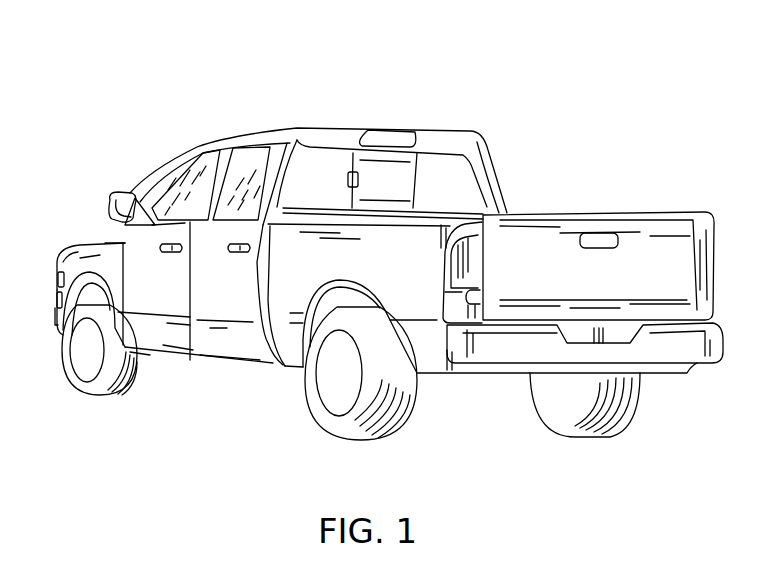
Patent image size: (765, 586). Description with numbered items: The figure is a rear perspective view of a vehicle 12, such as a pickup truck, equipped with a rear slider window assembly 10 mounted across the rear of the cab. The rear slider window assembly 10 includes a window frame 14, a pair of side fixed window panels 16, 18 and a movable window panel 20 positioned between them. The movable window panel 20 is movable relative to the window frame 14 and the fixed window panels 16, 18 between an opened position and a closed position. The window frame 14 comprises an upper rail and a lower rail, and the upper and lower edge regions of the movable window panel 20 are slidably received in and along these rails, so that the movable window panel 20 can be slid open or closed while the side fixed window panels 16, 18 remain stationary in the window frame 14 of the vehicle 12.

The rear slider window assembly 10 is at (449, 172).
The vehicle 12 is at (240, 87).
The window frame 14 is at (316, 213).
The side fixed window panel 16 is at (335, 155).
The side fixed window panel 18 is at (470, 188).
The movable window panel 20 is at (398, 155).